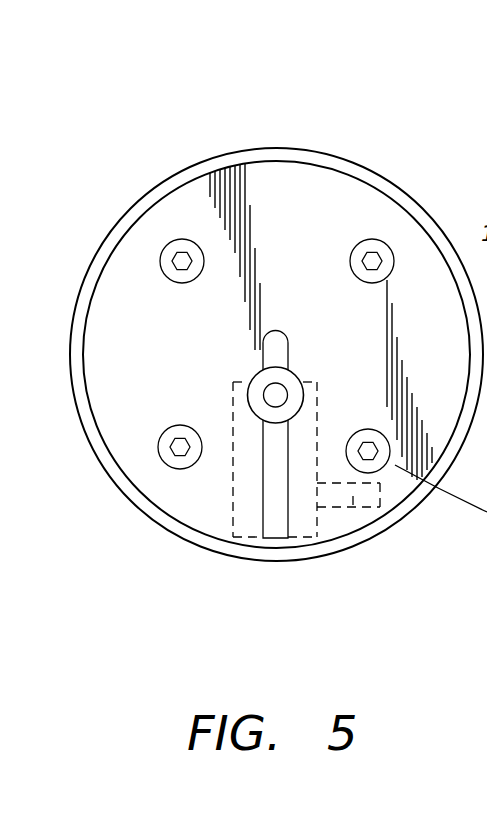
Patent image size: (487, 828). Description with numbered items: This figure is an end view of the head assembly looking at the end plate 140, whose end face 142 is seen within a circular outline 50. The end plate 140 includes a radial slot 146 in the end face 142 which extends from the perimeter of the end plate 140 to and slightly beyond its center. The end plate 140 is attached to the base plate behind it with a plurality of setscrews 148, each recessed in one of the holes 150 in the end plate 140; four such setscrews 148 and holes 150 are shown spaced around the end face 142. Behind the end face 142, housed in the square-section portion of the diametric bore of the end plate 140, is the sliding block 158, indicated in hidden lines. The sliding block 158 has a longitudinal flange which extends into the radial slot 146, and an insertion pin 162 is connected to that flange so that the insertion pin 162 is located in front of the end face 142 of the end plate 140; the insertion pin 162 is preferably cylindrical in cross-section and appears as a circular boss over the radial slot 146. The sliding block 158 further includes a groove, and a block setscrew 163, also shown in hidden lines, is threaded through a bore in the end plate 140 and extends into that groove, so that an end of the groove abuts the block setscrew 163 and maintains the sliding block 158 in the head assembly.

The housing 50 is at (308, 150).
The end plate 140 is at (267, 192).
The end face 142 is at (213, 493).
The radial slot 146 is at (285, 515).
The setscrews 148 is at (188, 250).
The holes 150 is at (181, 281).
The sliding block 158 is at (323, 537).
The insertion pin 162 is at (253, 392).
The block setscrew 163 is at (360, 537).